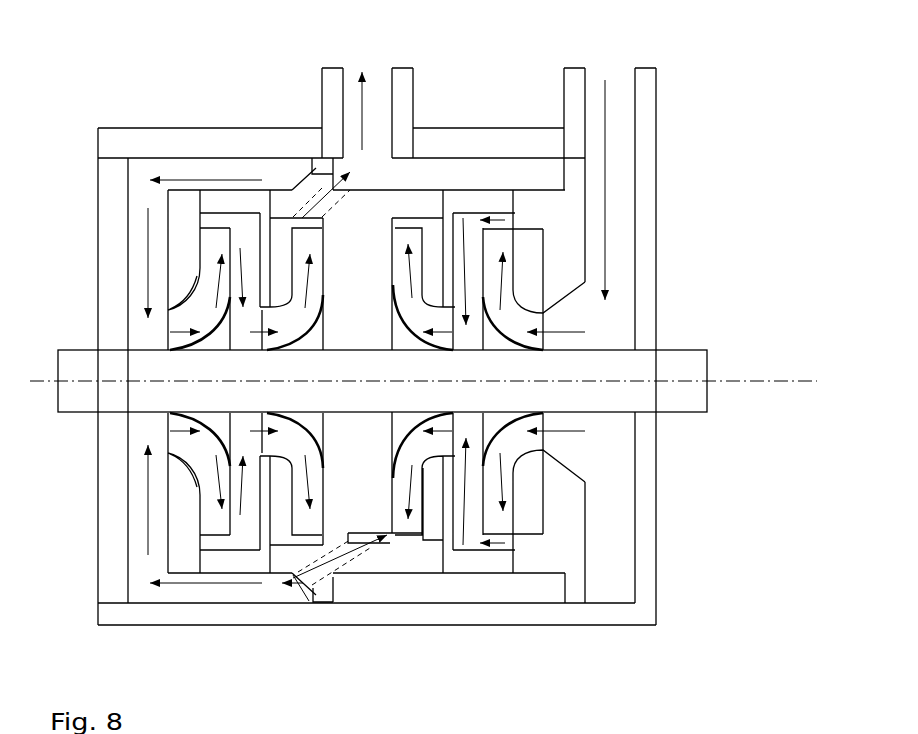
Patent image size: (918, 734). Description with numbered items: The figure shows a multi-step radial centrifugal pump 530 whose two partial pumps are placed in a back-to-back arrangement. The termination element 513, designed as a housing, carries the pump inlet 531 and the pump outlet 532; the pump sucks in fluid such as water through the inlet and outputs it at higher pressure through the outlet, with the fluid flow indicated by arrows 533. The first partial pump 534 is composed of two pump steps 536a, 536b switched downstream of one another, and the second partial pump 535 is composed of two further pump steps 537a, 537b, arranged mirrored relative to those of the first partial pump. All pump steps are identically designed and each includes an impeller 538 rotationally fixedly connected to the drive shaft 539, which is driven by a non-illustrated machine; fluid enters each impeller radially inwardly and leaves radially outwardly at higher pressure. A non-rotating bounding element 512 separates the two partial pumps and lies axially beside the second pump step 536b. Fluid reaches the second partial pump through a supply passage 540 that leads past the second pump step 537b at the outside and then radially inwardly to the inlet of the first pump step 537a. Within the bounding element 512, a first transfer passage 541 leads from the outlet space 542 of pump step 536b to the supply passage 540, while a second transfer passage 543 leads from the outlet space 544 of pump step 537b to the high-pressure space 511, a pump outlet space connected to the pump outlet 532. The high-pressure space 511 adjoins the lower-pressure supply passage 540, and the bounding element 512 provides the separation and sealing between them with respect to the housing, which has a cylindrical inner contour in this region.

The high-pressure space 511 is at (482, 172).
The bounding element 512 is at (370, 200).
The termination element 513 is at (205, 142).
The pump 530 is at (687, 170).
The pump inlet 531 is at (625, 80).
The pump outlet 532 is at (370, 78).
The arrows 533 is at (604, 98).
The first partial pump 534 is at (503, 635).
The second partial pump 535 is at (240, 637).
The first pump step of the first partial pump 536a is at (533, 543).
The second pump step of the first partial pump 536b is at (432, 558).
The first pump step of the second partial pump 537a is at (208, 565).
The second pump step of the second partial pump 537b is at (290, 555).
The impeller 538 is at (543, 312).
The drive shaft 539 is at (697, 402).
The supply passage 540 is at (172, 172).
The first transfer passage 541 is at (350, 545).
The outlet space 542 is at (423, 540).
The second transfer passage 543 is at (313, 163).
The outlet space 544 is at (292, 187).